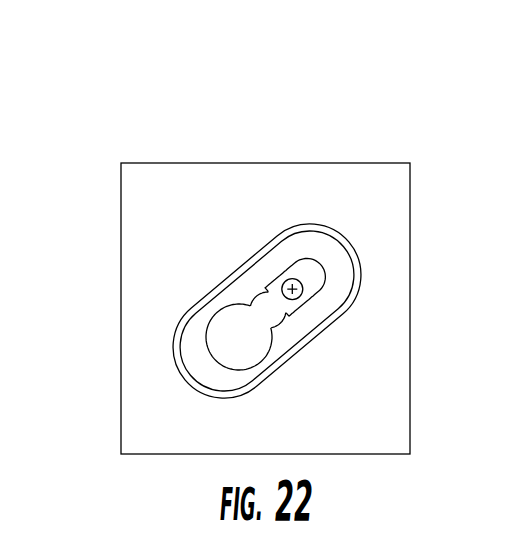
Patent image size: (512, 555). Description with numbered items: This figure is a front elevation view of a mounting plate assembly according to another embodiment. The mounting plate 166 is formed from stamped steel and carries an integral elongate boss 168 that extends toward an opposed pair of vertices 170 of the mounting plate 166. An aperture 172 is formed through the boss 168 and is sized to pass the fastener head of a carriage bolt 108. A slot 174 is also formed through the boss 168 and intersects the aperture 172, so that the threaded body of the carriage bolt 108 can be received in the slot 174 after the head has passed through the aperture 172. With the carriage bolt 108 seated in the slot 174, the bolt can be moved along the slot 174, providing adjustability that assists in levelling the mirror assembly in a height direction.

The carriage bolt 108 is at (305, 303).
The mounting plate 166 is at (362, 160).
The elongate boss 168 is at (237, 267).
The vertices 170 is at (411, 163).
The aperture 172 is at (256, 365).
The slot 174 is at (283, 271).